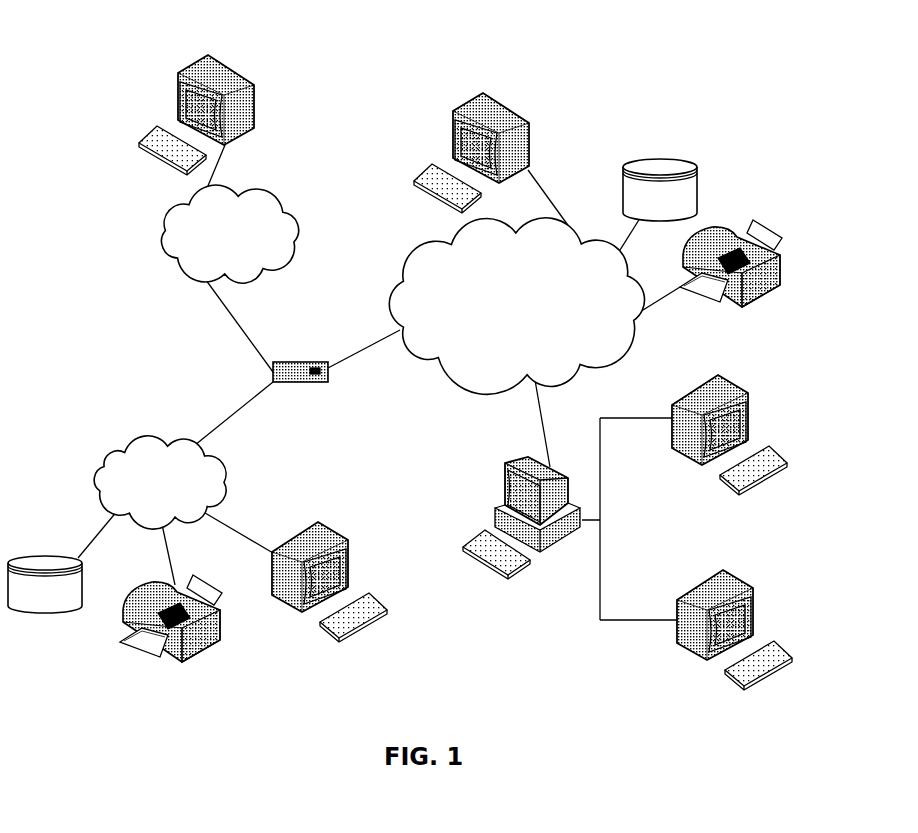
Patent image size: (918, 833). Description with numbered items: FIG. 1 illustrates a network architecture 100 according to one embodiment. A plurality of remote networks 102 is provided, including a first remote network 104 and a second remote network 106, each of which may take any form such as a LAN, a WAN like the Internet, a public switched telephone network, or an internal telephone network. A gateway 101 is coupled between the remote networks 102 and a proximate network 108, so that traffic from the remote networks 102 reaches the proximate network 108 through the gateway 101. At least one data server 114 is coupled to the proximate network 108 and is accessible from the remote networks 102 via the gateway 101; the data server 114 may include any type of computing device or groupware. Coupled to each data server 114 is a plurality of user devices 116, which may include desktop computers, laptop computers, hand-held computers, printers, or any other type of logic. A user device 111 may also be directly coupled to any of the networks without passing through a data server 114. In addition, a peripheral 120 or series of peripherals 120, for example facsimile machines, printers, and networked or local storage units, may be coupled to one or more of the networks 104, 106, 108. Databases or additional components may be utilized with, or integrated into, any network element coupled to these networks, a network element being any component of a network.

The architecture 100 is at (116, 40).
The gateway 101 is at (283, 360).
The remote networks 102 is at (135, 295).
The first remote network 104 is at (97, 458).
The second remote network 106 is at (297, 211).
The proximate network 108 is at (613, 362).
The user device 111 is at (530, 124).
The data server 114 is at (508, 474).
The user devices 116 is at (256, 91).
The peripheral 120 is at (697, 166).